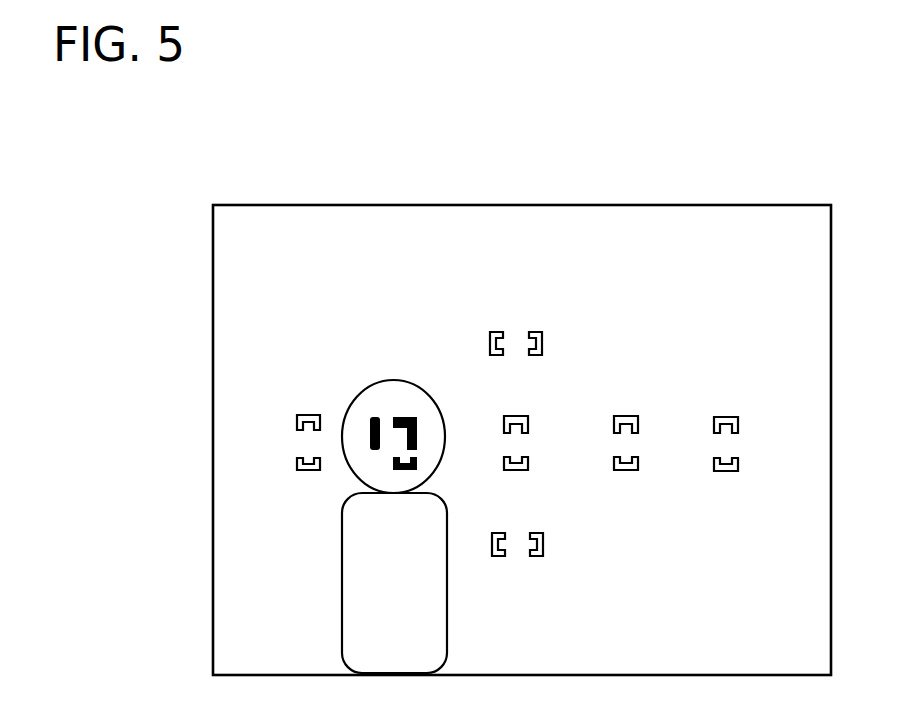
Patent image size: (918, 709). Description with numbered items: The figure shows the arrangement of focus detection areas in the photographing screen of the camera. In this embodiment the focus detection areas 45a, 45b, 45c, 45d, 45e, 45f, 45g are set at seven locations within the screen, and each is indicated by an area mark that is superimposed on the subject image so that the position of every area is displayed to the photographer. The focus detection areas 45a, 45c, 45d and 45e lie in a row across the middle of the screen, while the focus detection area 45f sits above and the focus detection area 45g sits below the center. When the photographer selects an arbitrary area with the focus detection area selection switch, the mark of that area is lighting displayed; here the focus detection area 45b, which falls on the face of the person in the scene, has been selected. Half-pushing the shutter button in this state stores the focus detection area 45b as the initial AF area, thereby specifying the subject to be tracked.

The focus detection area 45a is at (342, 395).
The focus detection area 45b is at (410, 416).
The focus detection area 45c is at (521, 416).
The focus detection area 45d is at (631, 416).
The focus detection area 45e is at (733, 417).
The focus detection area 45f is at (519, 330).
The focus detection area 45g is at (522, 557).